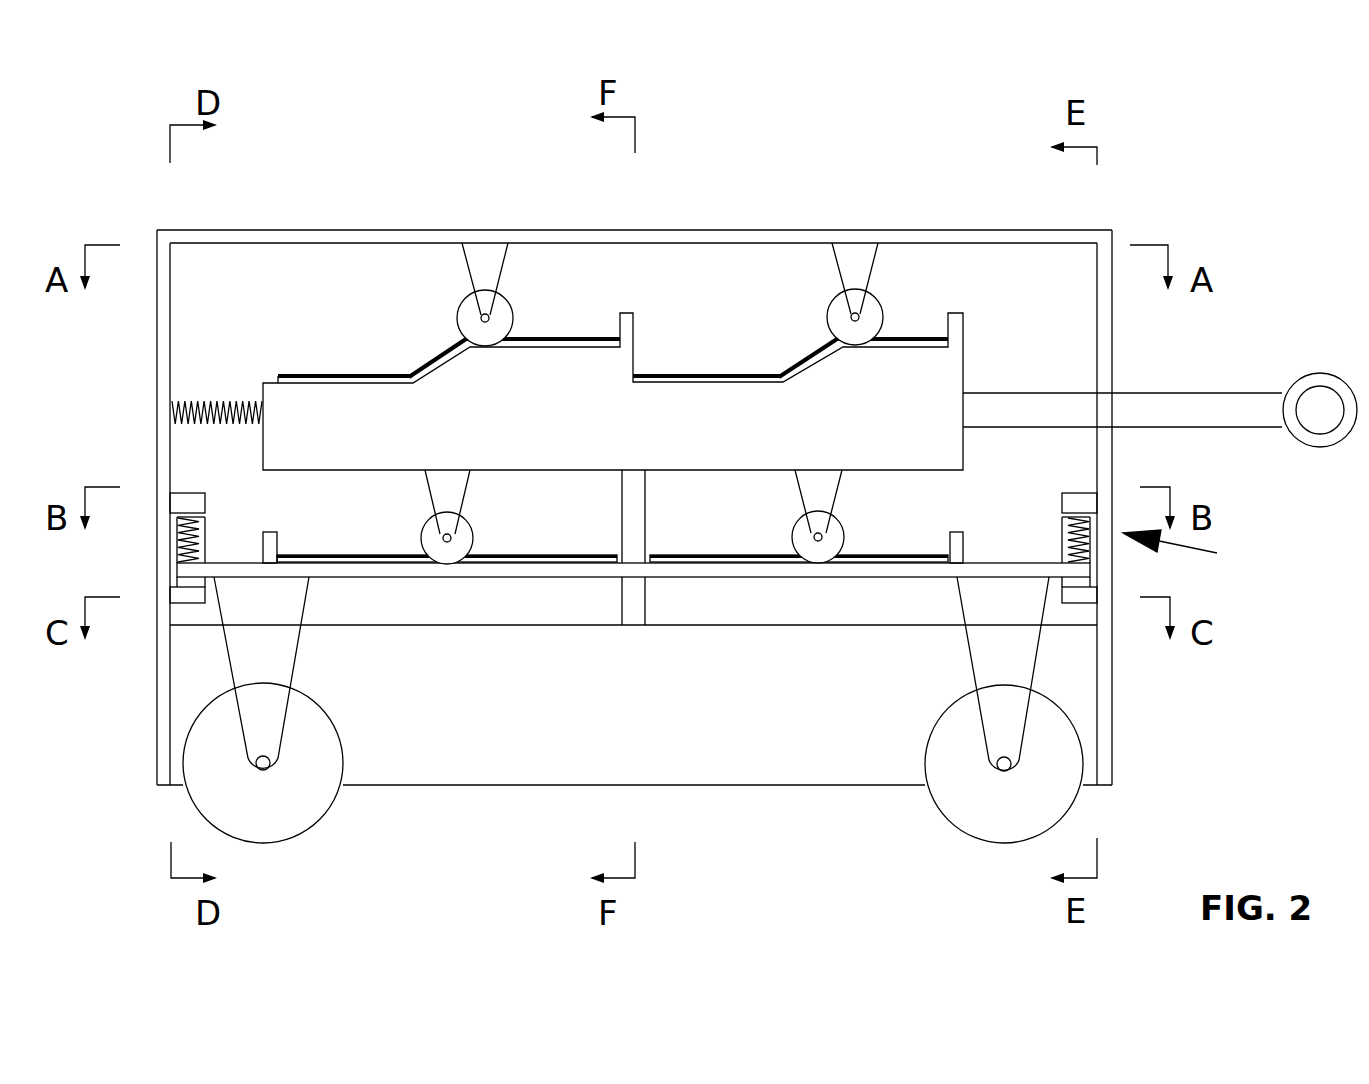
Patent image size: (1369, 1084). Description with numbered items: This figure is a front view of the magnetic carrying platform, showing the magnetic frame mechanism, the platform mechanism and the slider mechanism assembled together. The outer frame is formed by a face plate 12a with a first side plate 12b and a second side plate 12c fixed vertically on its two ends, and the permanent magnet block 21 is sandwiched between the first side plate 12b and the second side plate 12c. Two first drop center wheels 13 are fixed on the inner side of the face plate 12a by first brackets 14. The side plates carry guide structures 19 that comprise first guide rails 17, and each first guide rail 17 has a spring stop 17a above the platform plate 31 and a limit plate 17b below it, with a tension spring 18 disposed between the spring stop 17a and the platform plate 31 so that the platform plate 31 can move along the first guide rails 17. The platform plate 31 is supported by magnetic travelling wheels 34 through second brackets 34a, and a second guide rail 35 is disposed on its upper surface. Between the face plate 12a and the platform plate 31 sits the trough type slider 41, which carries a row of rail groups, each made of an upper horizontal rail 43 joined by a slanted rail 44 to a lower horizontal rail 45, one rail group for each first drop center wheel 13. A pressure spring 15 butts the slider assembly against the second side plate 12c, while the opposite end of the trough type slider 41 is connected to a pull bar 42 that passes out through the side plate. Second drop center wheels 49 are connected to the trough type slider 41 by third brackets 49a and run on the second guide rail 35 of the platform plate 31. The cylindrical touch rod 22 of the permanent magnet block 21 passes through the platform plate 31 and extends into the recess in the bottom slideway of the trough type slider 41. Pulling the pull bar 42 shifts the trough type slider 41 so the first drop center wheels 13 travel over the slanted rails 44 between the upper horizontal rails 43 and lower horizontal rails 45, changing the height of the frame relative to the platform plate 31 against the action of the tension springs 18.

The face plate 12a is at (258, 237).
The first side plate 12b is at (1103, 693).
The second side plate 12c is at (166, 675).
The first drop center wheel 13 is at (457, 303).
The first bracket 14 is at (485, 260).
The pressure spring 15 is at (175, 405).
The first guide rail 17 is at (190, 503).
The spring stop 17a is at (190, 515).
The limit plate 17b is at (178, 594).
The tension spring 18 is at (183, 538).
The guide structure 19 is at (1193, 551).
The permanent magnet block 21 is at (503, 676).
The cylindrical touch rod 22 is at (637, 512).
The platform plate 31 is at (722, 572).
The magnetic travelling wheel 34 is at (302, 793).
The second bracket 34a is at (277, 648).
The second guide rail 35 is at (578, 560).
The trough type slider 41 is at (830, 428).
The pull bar 42 is at (1203, 407).
The upper horizontal rail 43 is at (585, 337).
The slanted rail 44 is at (437, 357).
The lower horizontal rail 45 is at (333, 378).
The second drop center wheel 49 is at (430, 538).
The third bracket 49a is at (820, 489).